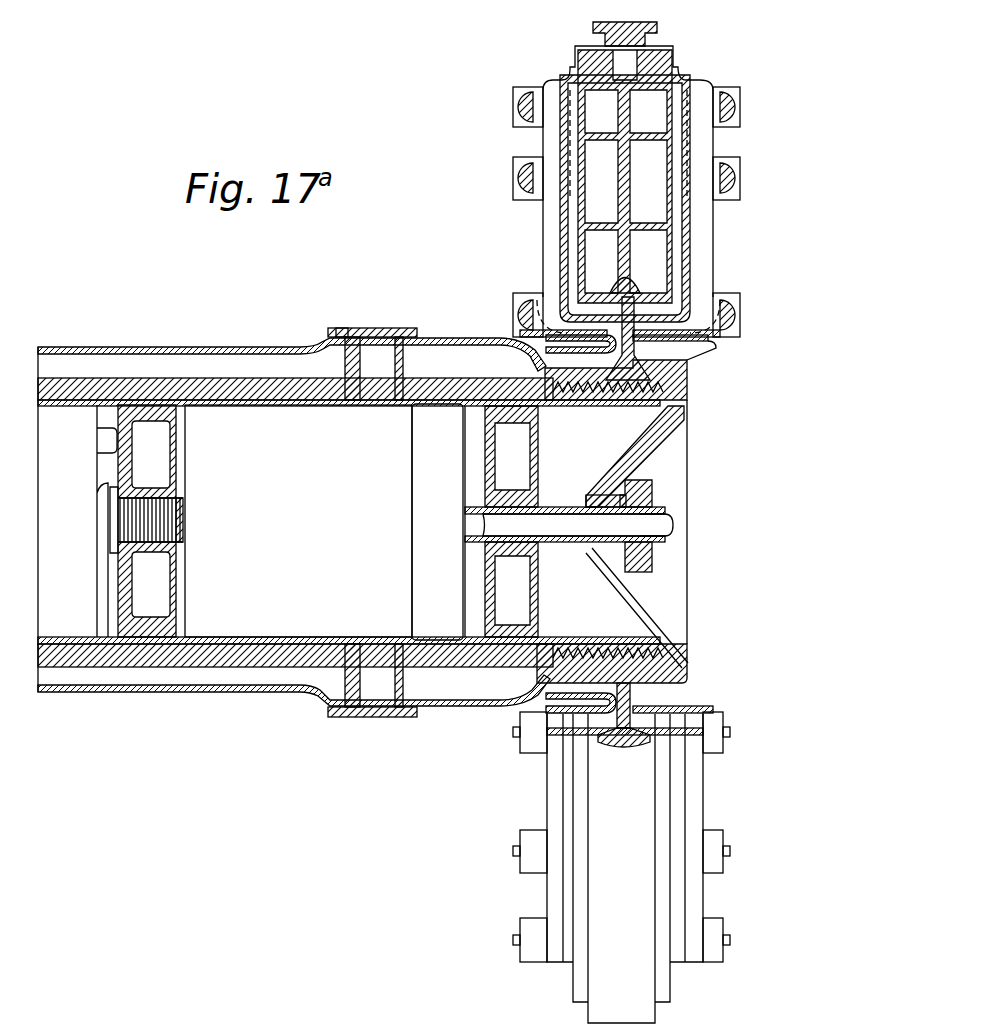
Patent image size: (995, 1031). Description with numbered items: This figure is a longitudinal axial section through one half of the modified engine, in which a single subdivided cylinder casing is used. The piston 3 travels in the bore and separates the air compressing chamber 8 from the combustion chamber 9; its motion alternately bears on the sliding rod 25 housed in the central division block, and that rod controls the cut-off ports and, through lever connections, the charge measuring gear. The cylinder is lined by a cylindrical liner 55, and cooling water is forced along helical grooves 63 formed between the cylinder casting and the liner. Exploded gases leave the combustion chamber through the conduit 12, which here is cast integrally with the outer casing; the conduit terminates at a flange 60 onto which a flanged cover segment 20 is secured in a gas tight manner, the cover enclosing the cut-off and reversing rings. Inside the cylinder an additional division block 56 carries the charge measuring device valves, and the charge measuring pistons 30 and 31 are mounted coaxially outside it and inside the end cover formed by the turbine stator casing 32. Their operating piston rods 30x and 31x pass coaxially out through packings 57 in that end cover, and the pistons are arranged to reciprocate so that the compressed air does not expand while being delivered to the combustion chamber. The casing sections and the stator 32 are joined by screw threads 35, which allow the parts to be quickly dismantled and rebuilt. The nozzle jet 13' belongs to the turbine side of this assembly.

The conduit 12 is at (557, 252).
The valve housing inner frame 13' is at (586, 176).
The flange 60 is at (346, 330).
The cover ring segment 20 is at (403, 328).
The helical groove 63 is at (227, 375).
The cylindrical liner 55 is at (282, 402).
The division block 56 is at (437, 522).
The charge measuring piston 30 is at (488, 454).
The operating piston rod 30x is at (664, 508).
The charge measuring piston 31 is at (538, 546).
The operating piston rod 31x is at (664, 529).
The packing 57 is at (650, 553).
The stator casing 32 is at (640, 618).
The screw thread 35 is at (650, 666).
The sliding rod 25 is at (104, 442).
The piston 3 is at (188, 416).
The air compressing chamber 8 is at (108, 578).
The combustion chamber 9 is at (298, 521).